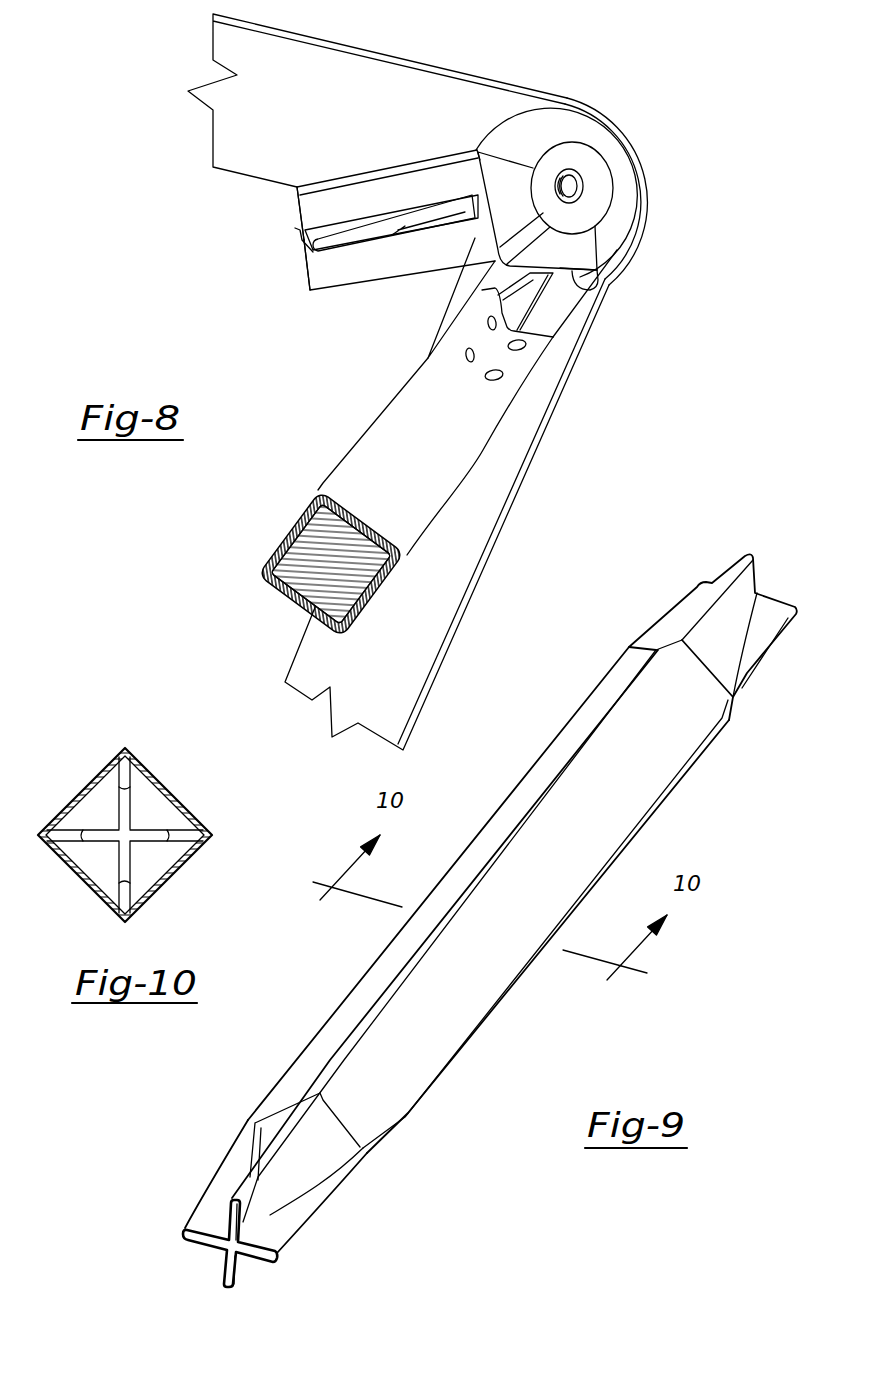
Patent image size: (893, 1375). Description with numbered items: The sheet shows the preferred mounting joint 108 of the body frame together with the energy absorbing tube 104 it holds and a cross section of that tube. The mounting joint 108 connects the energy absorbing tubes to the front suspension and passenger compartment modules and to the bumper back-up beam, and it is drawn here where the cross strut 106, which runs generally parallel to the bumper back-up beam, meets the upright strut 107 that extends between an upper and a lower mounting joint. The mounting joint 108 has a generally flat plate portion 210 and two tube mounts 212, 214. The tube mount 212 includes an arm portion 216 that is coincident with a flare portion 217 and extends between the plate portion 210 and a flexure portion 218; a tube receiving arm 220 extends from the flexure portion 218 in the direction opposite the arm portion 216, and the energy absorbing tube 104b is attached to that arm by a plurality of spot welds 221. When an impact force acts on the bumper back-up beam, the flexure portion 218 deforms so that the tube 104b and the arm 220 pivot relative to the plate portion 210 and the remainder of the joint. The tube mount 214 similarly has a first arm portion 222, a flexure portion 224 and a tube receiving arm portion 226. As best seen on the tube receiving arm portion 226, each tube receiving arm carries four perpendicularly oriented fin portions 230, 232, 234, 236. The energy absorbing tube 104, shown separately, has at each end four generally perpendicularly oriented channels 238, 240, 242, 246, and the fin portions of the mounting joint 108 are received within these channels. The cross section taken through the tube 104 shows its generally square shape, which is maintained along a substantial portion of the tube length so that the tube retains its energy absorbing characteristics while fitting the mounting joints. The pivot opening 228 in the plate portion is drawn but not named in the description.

In FIG. 9, the energy absorbing tube 104 is at (457, 1023).
In FIG. 10, the energy absorbing tube 104 is at (157, 773).
In FIG. 8, the energy absorbing tube 104b is at (357, 490).
In FIG. 8, the cross strut 106 is at (313, 110).
In FIG. 8, the upright strut 107 is at (366, 669).
In FIG. 8, the mounting joint 108 is at (587, 100).
In FIG. 8, the plate portion 210 is at (600, 190).
In FIG. 8, the tube mount 212 is at (567, 317).
In FIG. 8, the tube mount 214 is at (327, 183).
In FIG. 8, the arm portion 216 is at (583, 260).
In FIG. 8, the flare portion 217 is at (520, 133).
In FIG. 8, the flexure portion 218 is at (593, 287).
In FIG. 8, the tube receiving arm 220 is at (470, 283).
In FIG. 8, the spot welds 221 is at (505, 375).
In FIG. 8, the first arm portion 222 is at (500, 209).
In FIG. 8, the flexure portion 224 is at (477, 182).
In FIG. 8, the tube receiving arm portion 226 is at (367, 265).
In FIG. 8, the pivot hole 228 is at (575, 182).
In FIG. 8, the fin portion 230 is at (298, 212).
In FIG. 8, the fin portion 232 is at (292, 230).
In FIG. 8, the fin portion 234 is at (300, 275).
In FIG. 8, the fin portion 236 is at (327, 237).
In FIG. 9, the channel 238 is at (247, 1173).
In FIG. 9, the channel 240 is at (208, 1242).
In FIG. 9, the channel 242 is at (247, 1272).
In FIG. 9, the channel 246 is at (303, 1228).